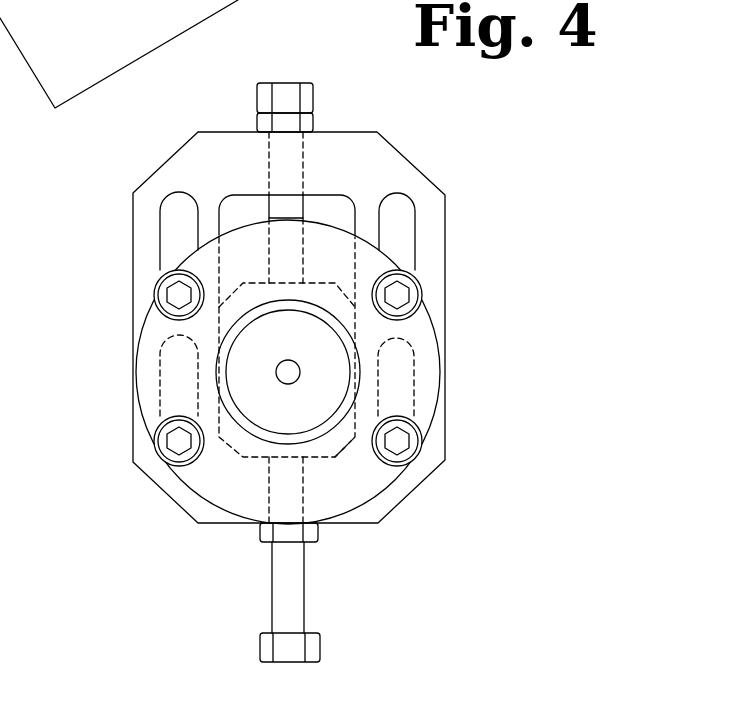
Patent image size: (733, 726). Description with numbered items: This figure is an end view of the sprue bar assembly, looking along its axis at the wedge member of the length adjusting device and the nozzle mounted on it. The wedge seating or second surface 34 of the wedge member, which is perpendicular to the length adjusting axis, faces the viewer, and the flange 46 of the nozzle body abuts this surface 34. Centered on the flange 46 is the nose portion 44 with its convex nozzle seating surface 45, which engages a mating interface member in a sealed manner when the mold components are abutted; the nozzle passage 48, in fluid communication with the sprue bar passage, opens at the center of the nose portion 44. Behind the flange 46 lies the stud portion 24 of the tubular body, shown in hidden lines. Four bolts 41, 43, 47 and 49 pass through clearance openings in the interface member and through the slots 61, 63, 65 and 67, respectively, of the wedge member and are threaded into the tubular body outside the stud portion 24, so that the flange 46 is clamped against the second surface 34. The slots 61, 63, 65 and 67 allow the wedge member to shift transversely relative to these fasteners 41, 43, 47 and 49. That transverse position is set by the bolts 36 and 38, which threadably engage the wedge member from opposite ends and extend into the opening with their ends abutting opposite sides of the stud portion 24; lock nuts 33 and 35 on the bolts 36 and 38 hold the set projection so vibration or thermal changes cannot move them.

The stud portion 24 is at (325, 280).
The lock nut 33 is at (303, 122).
The wedge seating or second surface 34 is at (242, 183).
The lock nut 35 is at (268, 528).
The bolt 36 is at (306, 92).
The bolt 38 is at (283, 563).
The bolt 41 is at (177, 293).
The bolt 43 is at (178, 440).
The nose portion 44 is at (325, 432).
The nozzle seating surface 45 is at (277, 354).
The flange 46 is at (259, 259).
The bolt 47 is at (397, 293).
The nozzle passage 48 is at (285, 375).
The bolt 49 is at (400, 440).
The slot 61 is at (176, 221).
The slot 63 is at (170, 353).
The slot 65 is at (392, 212).
The slot 67 is at (395, 378).